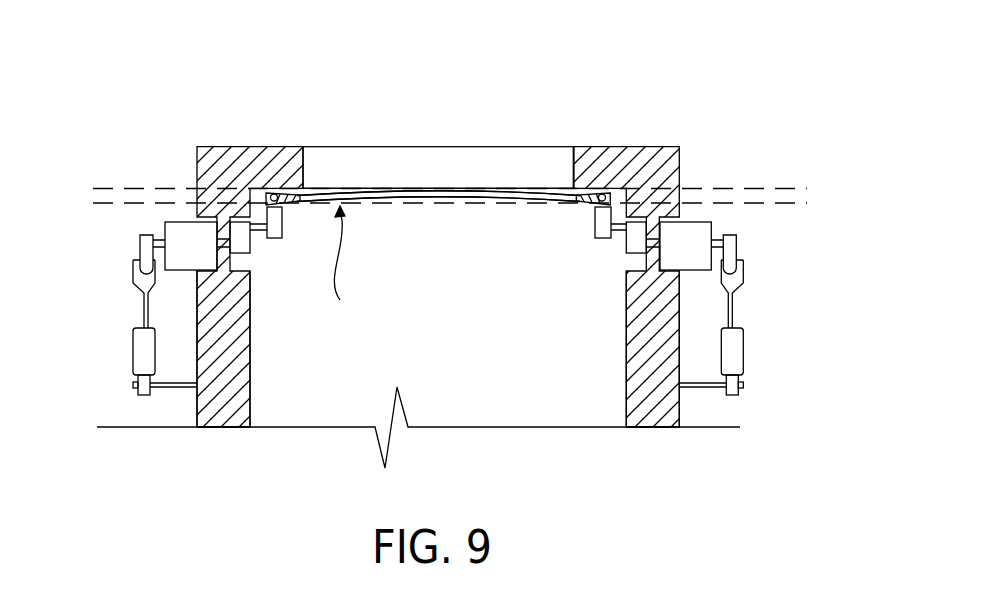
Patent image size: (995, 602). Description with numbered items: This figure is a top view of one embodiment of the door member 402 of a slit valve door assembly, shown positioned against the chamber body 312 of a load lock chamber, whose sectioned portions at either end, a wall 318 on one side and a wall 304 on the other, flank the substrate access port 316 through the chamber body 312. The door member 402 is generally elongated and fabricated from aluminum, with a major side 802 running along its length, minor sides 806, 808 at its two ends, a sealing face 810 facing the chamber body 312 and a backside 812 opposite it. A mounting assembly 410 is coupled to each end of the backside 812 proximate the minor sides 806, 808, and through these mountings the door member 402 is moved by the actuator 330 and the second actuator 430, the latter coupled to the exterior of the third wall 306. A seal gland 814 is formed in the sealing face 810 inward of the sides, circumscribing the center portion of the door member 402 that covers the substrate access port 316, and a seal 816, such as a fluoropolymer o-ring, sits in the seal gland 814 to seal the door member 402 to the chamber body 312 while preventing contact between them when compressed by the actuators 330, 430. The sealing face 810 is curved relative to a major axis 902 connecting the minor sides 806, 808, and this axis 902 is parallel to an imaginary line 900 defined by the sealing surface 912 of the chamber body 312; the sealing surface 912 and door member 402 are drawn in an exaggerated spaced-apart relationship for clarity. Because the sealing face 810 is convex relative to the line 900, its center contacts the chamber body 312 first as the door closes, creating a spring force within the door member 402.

The right clamp block 304 is at (612, 147).
The third wall 306 is at (679, 180).
The chamber body 312 is at (233, 146).
The substrate access port 316 is at (387, 163).
The left side wall 318 is at (197, 173).
The actuator 330 is at (142, 351).
The door member 402 is at (347, 271).
The mounting assembly 410 is at (272, 240).
The second actuator 430 is at (735, 353).
The major side 802 is at (452, 196).
The minor side 806 is at (267, 196).
The minor side 808 is at (612, 200).
The sealing face 810 is at (440, 188).
The backside 812 is at (373, 203).
The seal gland 814 is at (322, 195).
The seal 816 is at (303, 187).
The imaginary line 900 is at (768, 189).
The major axis 902 is at (767, 204).
The sealing surface 912 is at (605, 197).